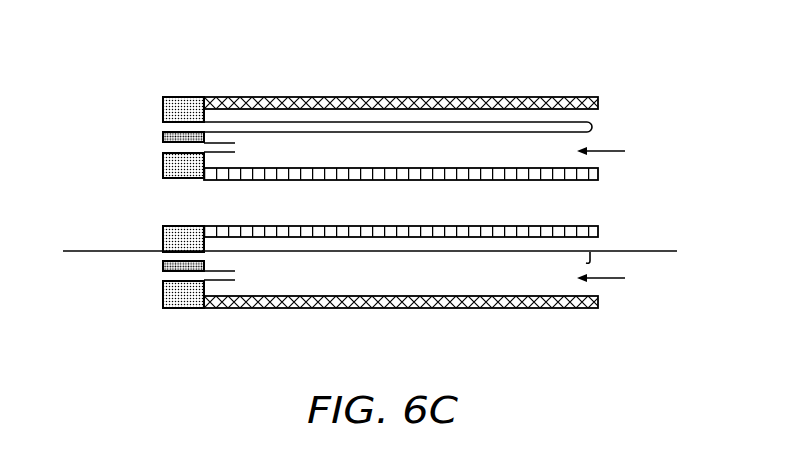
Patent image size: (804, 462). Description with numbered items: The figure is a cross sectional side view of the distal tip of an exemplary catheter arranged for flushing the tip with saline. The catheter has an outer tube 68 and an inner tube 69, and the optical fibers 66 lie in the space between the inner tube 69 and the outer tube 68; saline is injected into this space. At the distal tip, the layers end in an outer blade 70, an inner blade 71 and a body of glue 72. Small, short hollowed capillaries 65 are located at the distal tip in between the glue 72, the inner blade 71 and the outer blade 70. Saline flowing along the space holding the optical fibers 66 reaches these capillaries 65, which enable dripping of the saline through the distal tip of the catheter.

The small capillaries 65 is at (163, 147).
The optical fibers 66 is at (592, 131).
The outer tube 68 is at (247, 97).
The inner tube 69 is at (583, 180).
The outer blade 70 is at (163, 110).
The inner blade 71 is at (163, 170).
The glue 72 is at (163, 137).